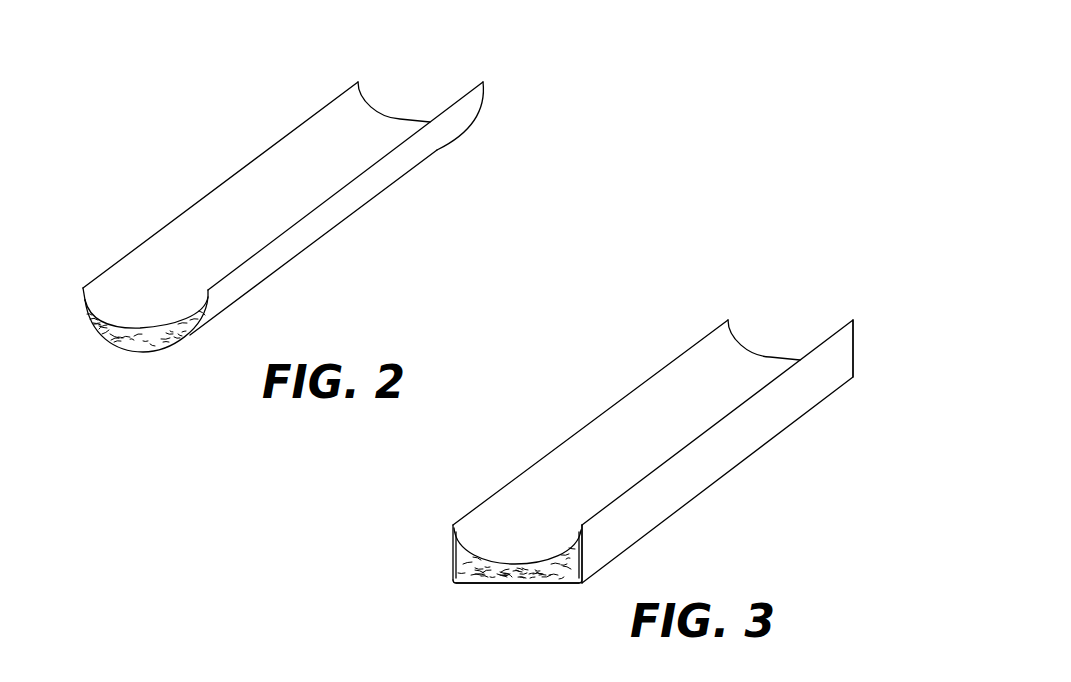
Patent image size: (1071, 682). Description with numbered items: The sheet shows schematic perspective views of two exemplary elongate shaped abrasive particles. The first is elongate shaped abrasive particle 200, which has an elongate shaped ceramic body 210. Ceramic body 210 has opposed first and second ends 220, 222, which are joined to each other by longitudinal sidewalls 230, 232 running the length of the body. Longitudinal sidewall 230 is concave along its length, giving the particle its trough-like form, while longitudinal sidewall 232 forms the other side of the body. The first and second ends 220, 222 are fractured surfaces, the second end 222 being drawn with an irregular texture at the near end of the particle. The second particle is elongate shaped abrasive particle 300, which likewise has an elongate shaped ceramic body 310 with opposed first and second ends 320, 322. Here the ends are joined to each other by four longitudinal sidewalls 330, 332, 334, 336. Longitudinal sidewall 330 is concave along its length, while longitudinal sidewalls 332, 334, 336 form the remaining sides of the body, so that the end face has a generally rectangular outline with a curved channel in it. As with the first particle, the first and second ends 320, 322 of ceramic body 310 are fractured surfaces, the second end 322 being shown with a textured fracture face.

In FIG. 2, the elongate shaped abrasive particle 200 is at (490, 40).
In FIG. 2, the elongate shaped ceramic body 210 is at (388, 170).
In FIG. 2, the first end 220 is at (398, 117).
In FIG. 2, the longitudinal sidewall 230 is at (135, 272).
In FIG. 2, the longitudinal sidewall 232 is at (285, 253).
In FIG. 2, the second end 222 is at (120, 333).
In FIG. 3, the elongate shaped abrasive particle 300 is at (860, 280).
In FIG. 3, the elongate shaped ceramic body 310 is at (802, 402).
In FIG. 3, the first end 320 is at (770, 353).
In FIG. 3, the longitudinal sidewall 330 is at (507, 510).
In FIG. 3, the longitudinal sidewall 332 is at (668, 497).
In FIG. 3, the longitudinal sidewall 336 is at (453, 548).
In FIG. 3, the second end 322 is at (453, 577).
In FIG. 3, the longitudinal sidewall 334 is at (515, 585).